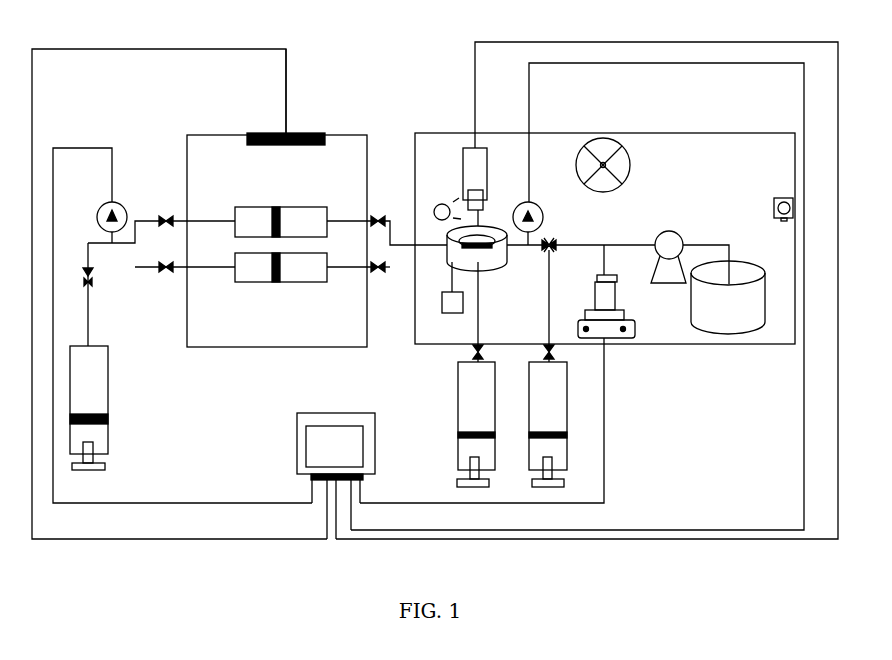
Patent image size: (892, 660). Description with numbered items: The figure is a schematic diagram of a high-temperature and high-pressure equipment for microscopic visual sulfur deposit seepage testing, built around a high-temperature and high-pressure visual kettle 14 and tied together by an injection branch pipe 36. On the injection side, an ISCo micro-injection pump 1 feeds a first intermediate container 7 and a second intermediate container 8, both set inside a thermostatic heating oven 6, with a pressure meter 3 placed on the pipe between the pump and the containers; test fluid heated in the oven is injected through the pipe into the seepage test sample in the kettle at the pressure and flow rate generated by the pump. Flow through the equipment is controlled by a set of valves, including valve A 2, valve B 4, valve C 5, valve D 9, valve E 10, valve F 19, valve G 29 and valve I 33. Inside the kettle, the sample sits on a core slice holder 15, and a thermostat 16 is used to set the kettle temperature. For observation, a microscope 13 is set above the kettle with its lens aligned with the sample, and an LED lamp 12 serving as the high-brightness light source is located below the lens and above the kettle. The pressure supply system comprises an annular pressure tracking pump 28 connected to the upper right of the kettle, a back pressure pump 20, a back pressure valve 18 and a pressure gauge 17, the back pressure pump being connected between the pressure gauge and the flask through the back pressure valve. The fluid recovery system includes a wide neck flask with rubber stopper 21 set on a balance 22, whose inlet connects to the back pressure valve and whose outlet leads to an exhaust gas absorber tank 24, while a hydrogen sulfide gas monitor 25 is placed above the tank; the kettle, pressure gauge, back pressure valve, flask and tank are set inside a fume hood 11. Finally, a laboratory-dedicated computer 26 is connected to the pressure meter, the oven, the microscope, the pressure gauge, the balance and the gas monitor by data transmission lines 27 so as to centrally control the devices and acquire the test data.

The ISCo micro-injection pump 1 is at (108, 400).
The valve A 2 is at (92, 282).
The pressure meter 3 is at (119, 204).
The valve B 4 is at (166, 273).
The valve C 5 is at (165, 215).
The thermostatic heating oven 6 is at (348, 135).
The first intermediate container 7 is at (290, 207).
The second intermediate container 8 is at (285, 282).
The valve D 9 is at (383, 215).
The valve E 10 is at (380, 275).
The fume hood 11 is at (605, 133).
The LED lamp 12 is at (437, 203).
The microscope 13 is at (487, 176).
The high-temperature and high-pressure visual kettle 14 is at (481, 264).
The core slice holder 15 is at (497, 250).
The thermostat 16 is at (441, 300).
The pressure gauge 17 is at (533, 203).
The back pressure valve 18 is at (551, 240).
The valve F 19 is at (545, 352).
The back pressure pump 20 is at (529, 400).
The wide neck flask with rubber stopper 21 is at (615, 300).
The balance 22 is at (636, 327).
The exhaust gas absorber tank 24 is at (755, 262).
The hydrogen sulfide gas monitor 25 is at (777, 195).
The computer 26 is at (338, 413).
The data transmission line 27 is at (32, 100).
The annular pressure tracking pump 28 is at (458, 400).
The valve G 29 is at (475, 355).
The valve I 33 is at (678, 232).
The injection branch pipe 36 is at (92, 315).